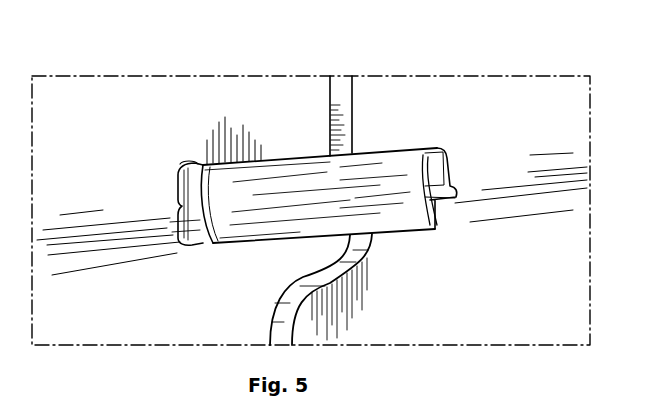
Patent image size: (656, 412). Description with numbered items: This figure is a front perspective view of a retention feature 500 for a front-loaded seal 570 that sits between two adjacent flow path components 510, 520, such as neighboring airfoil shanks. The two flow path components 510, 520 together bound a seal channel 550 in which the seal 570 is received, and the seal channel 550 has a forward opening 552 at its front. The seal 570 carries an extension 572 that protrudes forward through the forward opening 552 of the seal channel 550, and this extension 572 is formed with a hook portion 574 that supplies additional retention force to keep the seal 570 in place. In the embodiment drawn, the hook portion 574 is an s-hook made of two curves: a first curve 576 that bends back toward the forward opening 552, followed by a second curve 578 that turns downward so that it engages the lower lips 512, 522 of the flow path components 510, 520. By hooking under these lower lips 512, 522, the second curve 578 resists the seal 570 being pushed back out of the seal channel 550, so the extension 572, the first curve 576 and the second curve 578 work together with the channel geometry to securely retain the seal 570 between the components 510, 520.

The retention feature 500 is at (88, 61).
The flow path component 510 is at (213, 100).
The flow path component 520 is at (400, 87).
The lower lip 512 is at (187, 210).
The lower lip 522 is at (445, 197).
The seal channel 550 is at (455, 140).
The forward opening 552 is at (183, 173).
The front-loaded seal 570 is at (362, 167).
The extension 572 is at (403, 160).
The hook portion 574 is at (182, 204).
The first curve 576 is at (277, 172).
The second curve 578 is at (250, 233).